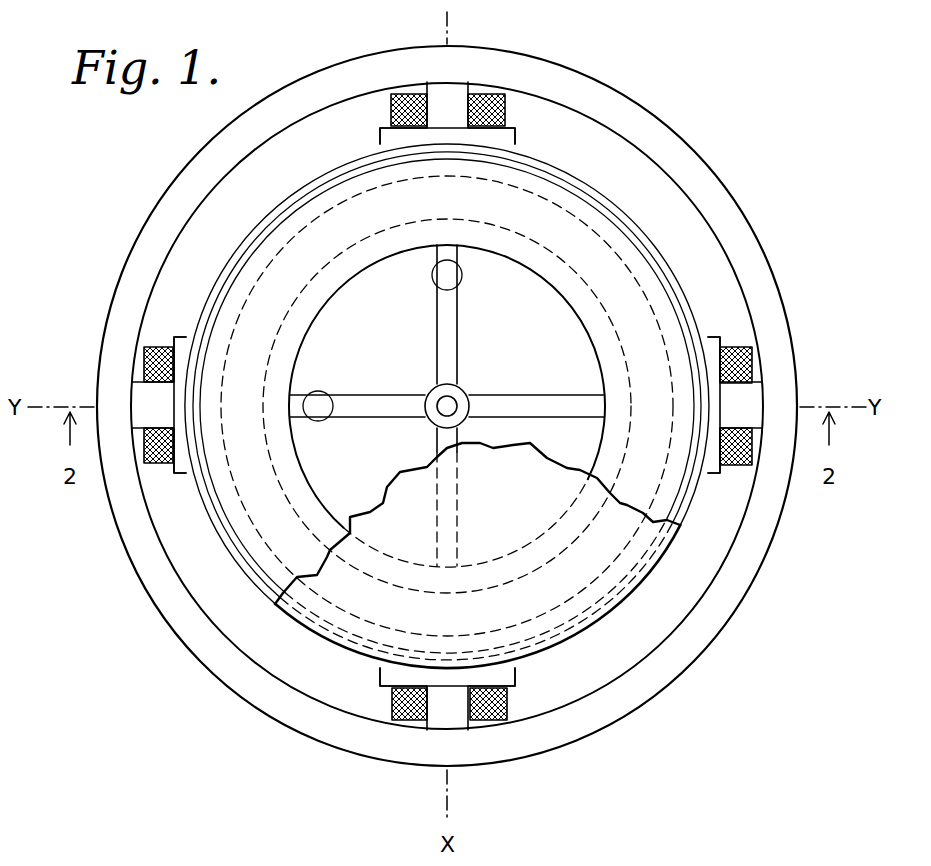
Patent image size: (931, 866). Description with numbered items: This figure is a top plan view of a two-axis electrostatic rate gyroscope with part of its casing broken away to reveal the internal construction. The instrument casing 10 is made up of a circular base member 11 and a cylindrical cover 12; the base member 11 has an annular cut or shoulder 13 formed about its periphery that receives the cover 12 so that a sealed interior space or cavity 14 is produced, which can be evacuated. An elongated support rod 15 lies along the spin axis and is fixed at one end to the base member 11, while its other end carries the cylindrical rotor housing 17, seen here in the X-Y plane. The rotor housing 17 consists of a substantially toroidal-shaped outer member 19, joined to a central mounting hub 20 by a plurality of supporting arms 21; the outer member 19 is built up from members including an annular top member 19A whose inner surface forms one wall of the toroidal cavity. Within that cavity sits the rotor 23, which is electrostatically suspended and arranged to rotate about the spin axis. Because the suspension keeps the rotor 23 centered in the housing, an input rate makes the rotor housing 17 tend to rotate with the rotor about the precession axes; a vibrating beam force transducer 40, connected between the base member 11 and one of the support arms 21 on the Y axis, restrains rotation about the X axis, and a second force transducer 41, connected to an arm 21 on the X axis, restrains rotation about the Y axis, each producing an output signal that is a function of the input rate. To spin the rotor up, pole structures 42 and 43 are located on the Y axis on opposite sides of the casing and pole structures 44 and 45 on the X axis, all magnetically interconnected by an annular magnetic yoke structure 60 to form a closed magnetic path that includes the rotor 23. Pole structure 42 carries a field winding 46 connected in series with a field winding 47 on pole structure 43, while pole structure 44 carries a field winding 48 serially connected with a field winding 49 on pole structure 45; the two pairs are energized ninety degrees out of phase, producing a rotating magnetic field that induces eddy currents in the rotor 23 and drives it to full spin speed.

The instrument casing 10 is at (700, 273).
The circular base member 11 is at (568, 168).
The cylindrical cover 12 is at (574, 580).
The annular cut or shoulder 13 is at (608, 198).
The sealed interior space or cavity 14 is at (542, 312).
The support rod 15 is at (456, 400).
The rotor housing 17 is at (310, 213).
The toroidal-shaped outer member 19 is at (276, 576).
The annular top member 19A is at (252, 540).
The central mounting hub 20 is at (455, 385).
The supporting arms 21 is at (395, 388).
The rotor 23 is at (254, 472).
The vibrating beam force transducer 40 is at (326, 390).
The vibrating beam force transducer 41 is at (432, 278).
The pole structure 42 is at (182, 346).
The pole structure 43 is at (710, 346).
The pole structure 44 is at (505, 142).
The pole structure 45 is at (387, 677).
The field winding 46 is at (152, 362).
The field winding 47 is at (752, 366).
The field winding 48 is at (497, 102).
The field winding 49 is at (405, 700).
The annular magnetic yoke structure 60 is at (160, 228).